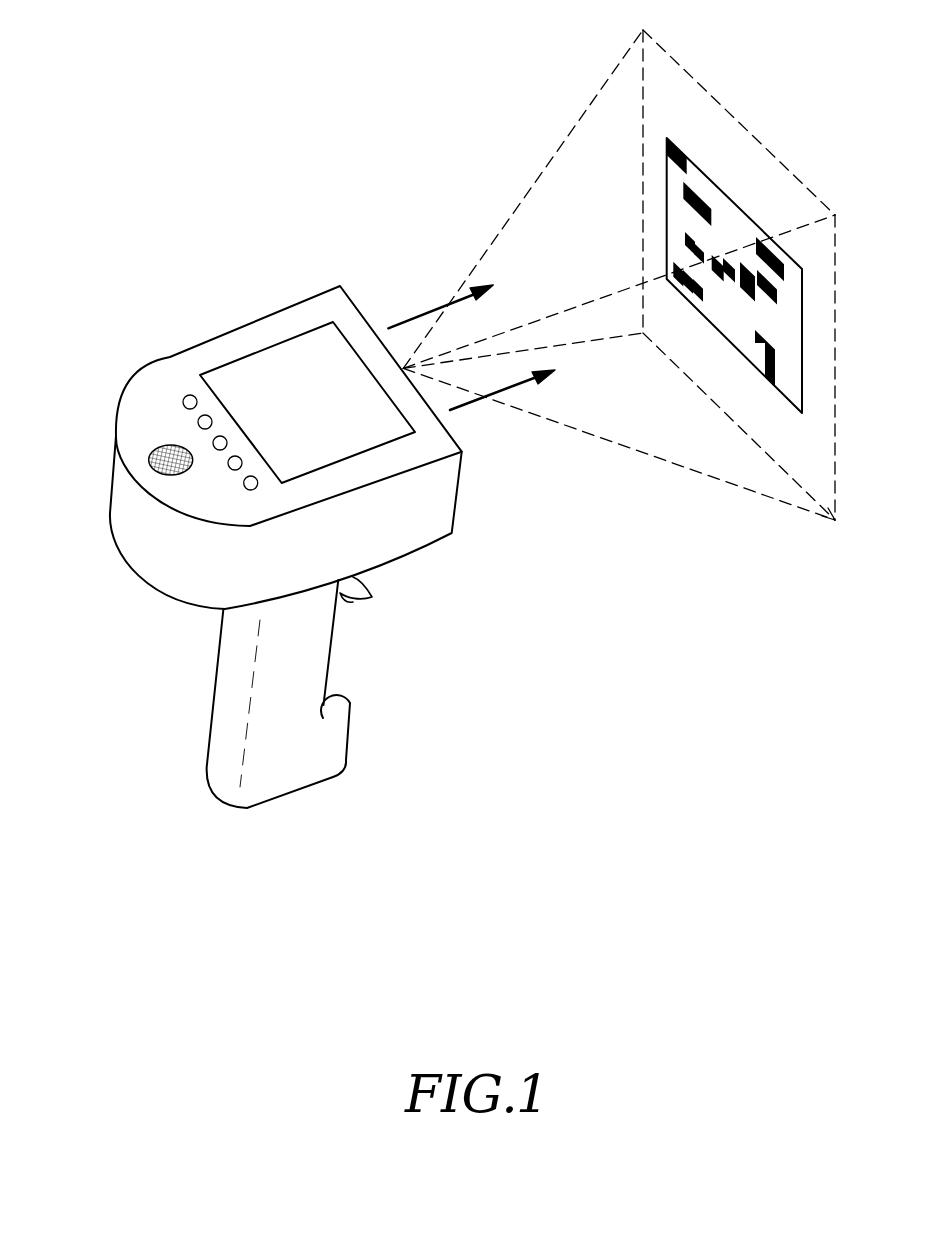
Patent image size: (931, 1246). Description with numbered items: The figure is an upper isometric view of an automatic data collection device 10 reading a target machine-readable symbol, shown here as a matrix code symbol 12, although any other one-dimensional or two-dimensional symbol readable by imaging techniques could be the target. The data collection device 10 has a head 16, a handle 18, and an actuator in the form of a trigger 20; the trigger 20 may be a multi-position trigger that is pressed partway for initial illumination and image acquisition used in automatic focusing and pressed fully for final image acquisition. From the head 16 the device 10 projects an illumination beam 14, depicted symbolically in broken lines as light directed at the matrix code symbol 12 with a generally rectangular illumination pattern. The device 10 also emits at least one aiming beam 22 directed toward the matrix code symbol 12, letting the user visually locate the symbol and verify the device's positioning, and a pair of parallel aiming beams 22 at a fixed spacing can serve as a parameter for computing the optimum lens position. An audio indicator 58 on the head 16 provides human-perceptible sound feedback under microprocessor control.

The automatic data collection device 10 is at (213, 284).
The matrix code symbol 12 is at (745, 212).
The illumination beam 14 is at (622, 445).
The head 16 is at (152, 402).
The handle 18 is at (227, 694).
The trigger 20 is at (353, 602).
The aiming beam 22 is at (403, 322).
The audio indicator 58 is at (153, 463).